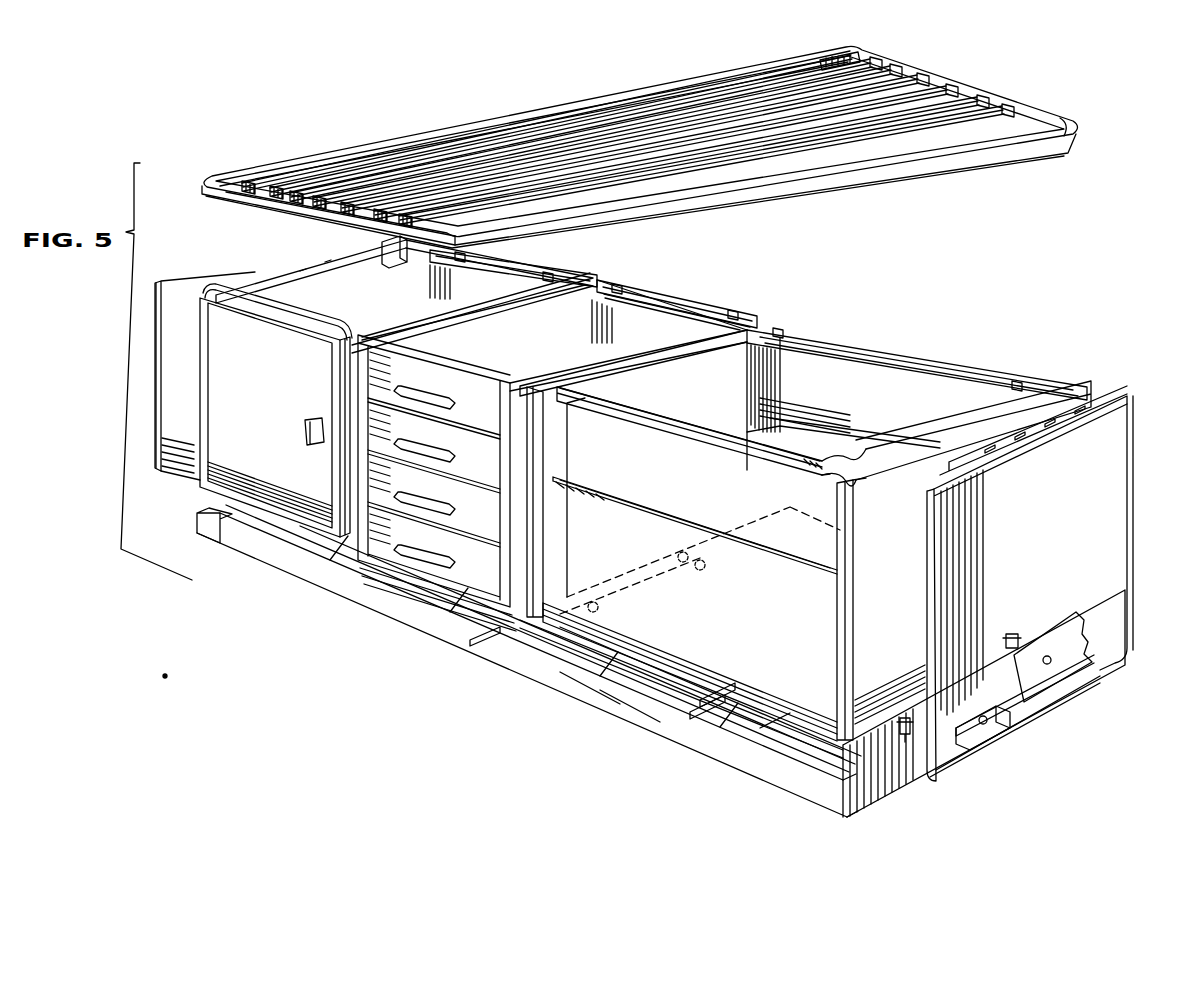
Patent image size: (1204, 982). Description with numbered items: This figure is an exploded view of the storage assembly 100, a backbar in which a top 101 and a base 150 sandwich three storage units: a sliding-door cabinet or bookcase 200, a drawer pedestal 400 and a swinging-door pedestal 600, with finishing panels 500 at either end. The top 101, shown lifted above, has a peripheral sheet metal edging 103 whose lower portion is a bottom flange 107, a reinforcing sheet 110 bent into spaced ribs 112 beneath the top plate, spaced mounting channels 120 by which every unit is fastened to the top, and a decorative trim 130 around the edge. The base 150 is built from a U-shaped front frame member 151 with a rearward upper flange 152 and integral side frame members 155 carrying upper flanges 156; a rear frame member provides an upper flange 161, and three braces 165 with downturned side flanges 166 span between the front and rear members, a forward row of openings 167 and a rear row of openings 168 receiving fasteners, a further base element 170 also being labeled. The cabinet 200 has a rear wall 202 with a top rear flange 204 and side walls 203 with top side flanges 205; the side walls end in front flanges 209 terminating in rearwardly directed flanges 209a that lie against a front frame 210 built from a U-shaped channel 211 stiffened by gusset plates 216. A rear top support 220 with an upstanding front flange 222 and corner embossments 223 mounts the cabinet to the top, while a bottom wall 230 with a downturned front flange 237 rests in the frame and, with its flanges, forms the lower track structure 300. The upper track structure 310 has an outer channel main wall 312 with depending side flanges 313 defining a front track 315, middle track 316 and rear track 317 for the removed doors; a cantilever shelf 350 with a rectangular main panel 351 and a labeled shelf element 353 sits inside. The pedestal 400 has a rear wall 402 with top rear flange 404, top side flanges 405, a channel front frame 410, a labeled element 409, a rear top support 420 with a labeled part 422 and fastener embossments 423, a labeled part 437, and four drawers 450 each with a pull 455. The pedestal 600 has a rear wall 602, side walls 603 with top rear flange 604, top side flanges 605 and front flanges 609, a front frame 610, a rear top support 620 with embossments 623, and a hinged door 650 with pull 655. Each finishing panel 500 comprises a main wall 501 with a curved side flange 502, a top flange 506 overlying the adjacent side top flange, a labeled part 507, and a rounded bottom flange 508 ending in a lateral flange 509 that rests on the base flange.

The storage assembly 100 is at (152, 108).
The top 101 is at (629, 146).
The edging 103 is at (224, 178).
The bottom flange 107 is at (246, 199).
The reinforcing sheet 110 is at (868, 130).
The ribs 112 is at (873, 97).
The mounting channels 120 is at (742, 88).
The decorative trim 130 is at (1000, 100).
The base 150 is at (636, 673).
The front frame member 151 is at (642, 730).
The upper flange 152 is at (602, 712).
The side frame members 155 is at (885, 790).
The upper flanges 156 is at (215, 512).
The upper flange 161 is at (1034, 640).
The braces 165 is at (482, 650).
The side flanges 166 is at (706, 708).
The openings 167 is at (630, 582).
The rear openings 168 is at (715, 572).
The mounting bracket 170 is at (1005, 712).
The storage unit 200 is at (805, 512).
The rear wall 202 is at (897, 403).
The side walls 203 is at (607, 442).
The top rear flange 204 is at (945, 352).
The top side flanges 205 is at (710, 350).
The front flanges 209 is at (838, 650).
The rearwardly directed flanges 209a is at (546, 580).
The front frame 210 is at (680, 392).
The U-shaped channel 211 is at (784, 440).
The gusset plates 216 is at (848, 458).
The rear top support 220 is at (902, 342).
The front flange 222 is at (784, 400).
The embossments 223 is at (785, 328).
The bottom wall 230 is at (792, 615).
The front flange 237 is at (766, 715).
The lower track structure 300 is at (765, 596).
The upper track structure 310 is at (726, 449).
The main wall 312 is at (842, 478).
The side flanges 313 is at (672, 443).
The front track 315 is at (540, 682).
The middle track 316 is at (562, 692).
The rear track 317 is at (629, 636).
The shelf 350 is at (855, 558).
The main panel 351 is at (865, 437).
The shelf front edge 353 is at (616, 505).
The storage unit 400 is at (510, 449).
The rear wall 402 is at (647, 335).
The top rear flange 404 is at (668, 295).
The top side flanges 405 is at (564, 355).
The drawer 409 is at (375, 548).
The front frame 410 is at (469, 348).
The rear top support 420 is at (645, 290).
The rail 422 is at (616, 312).
The embossments 423 is at (612, 290).
The drawer slide 437 is at (382, 562).
The drawers 450 is at (482, 577).
The pull 455 is at (402, 578).
The finishing panel 500 is at (609, 526).
The main wall 501 is at (198, 373).
The curved side flange 502 is at (157, 417).
The top flange 506 is at (253, 271).
The fastener 507 is at (328, 261).
The rounded bottom flange 508 is at (166, 475).
The lateral flange 509 is at (1032, 672).
The storage unit 600 is at (388, 396).
The rear wall 602 is at (492, 300).
The side walls 603 is at (412, 300).
The top rear flange 604 is at (552, 275).
The top side flanges 605 is at (380, 255).
The front flanges 609 is at (206, 398).
The front frame 610 is at (317, 301).
The rear top support 620 is at (505, 270).
The embossments 623 is at (463, 262).
The door 650 is at (240, 345).
The pull 655 is at (305, 432).